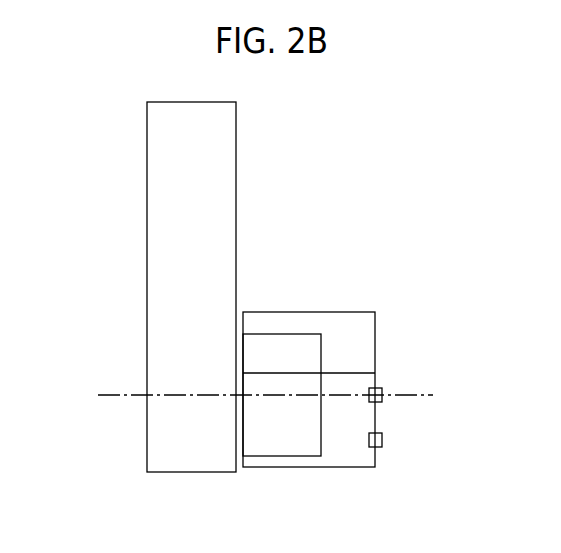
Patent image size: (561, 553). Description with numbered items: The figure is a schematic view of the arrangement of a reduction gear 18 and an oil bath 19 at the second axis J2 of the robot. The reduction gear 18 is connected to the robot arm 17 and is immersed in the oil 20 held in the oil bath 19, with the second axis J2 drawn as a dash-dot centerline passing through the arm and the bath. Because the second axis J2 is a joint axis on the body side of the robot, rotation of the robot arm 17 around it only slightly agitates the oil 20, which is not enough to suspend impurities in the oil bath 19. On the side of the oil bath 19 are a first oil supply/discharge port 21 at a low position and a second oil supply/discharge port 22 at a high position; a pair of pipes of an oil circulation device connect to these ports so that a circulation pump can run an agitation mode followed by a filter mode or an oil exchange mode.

The robot arm 17 is at (236, 208).
The reduction gear 18 is at (272, 334).
The oil bath 19 is at (356, 312).
The oil 20 is at (340, 373).
The first oil supply/discharge port 21 is at (382, 440).
The second oil supply/discharge port 22 is at (382, 393).
The second axis J2 is at (104, 395).